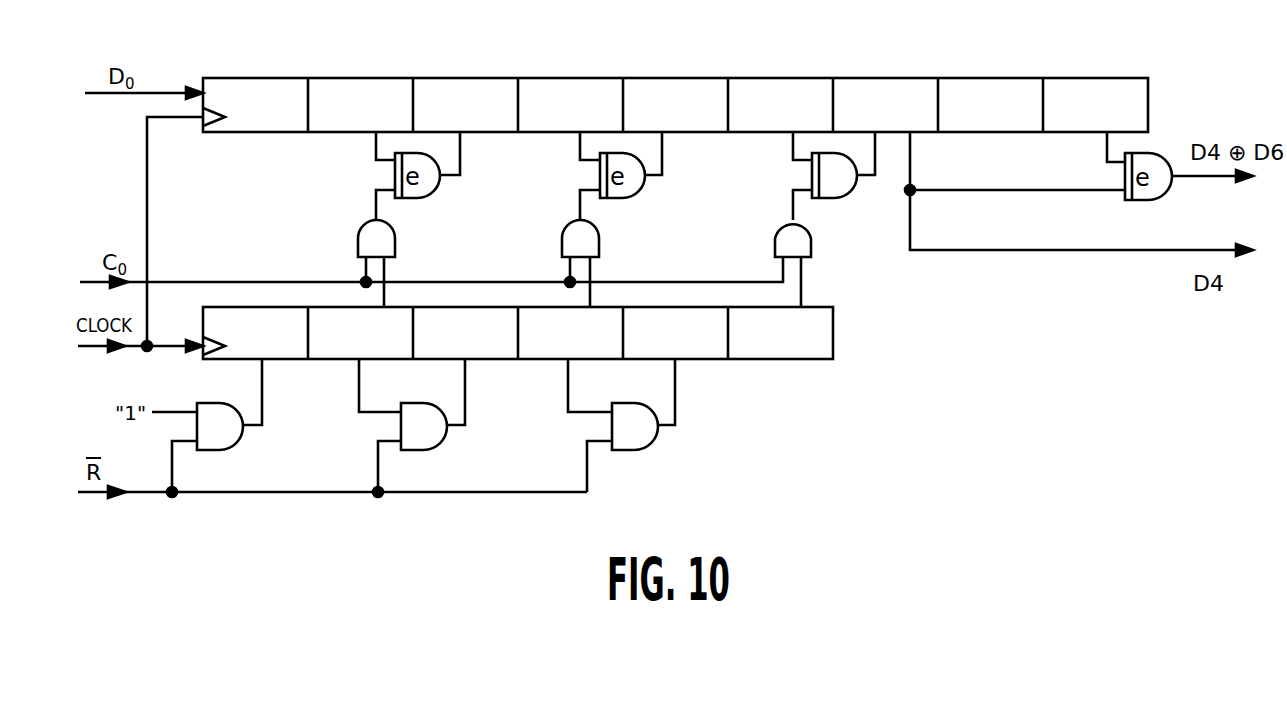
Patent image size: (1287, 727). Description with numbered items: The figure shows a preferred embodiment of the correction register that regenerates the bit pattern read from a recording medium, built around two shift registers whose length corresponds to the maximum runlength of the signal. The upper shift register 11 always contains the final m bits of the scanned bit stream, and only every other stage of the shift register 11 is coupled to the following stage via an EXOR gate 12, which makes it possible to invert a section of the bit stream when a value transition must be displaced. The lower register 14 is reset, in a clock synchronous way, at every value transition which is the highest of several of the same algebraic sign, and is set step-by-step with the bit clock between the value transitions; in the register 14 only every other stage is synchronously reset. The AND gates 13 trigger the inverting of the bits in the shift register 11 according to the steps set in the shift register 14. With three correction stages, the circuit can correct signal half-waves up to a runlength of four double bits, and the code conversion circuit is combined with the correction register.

The shift register 11 is at (766, 78).
The EXOR gate 12 is at (840, 198).
The AND gate 13 is at (806, 241).
The shift register 14 is at (833, 329).